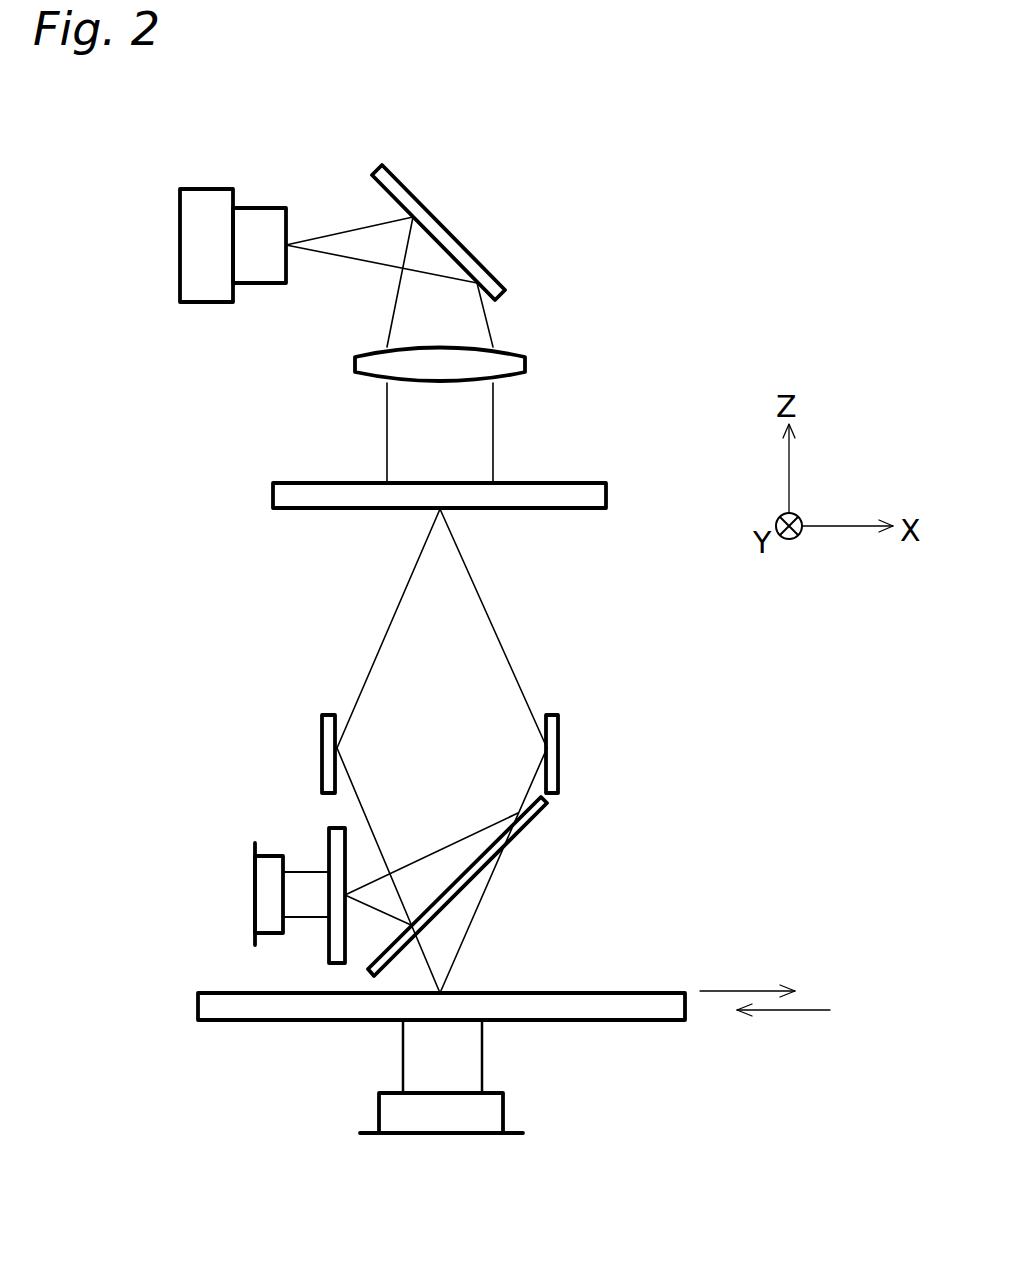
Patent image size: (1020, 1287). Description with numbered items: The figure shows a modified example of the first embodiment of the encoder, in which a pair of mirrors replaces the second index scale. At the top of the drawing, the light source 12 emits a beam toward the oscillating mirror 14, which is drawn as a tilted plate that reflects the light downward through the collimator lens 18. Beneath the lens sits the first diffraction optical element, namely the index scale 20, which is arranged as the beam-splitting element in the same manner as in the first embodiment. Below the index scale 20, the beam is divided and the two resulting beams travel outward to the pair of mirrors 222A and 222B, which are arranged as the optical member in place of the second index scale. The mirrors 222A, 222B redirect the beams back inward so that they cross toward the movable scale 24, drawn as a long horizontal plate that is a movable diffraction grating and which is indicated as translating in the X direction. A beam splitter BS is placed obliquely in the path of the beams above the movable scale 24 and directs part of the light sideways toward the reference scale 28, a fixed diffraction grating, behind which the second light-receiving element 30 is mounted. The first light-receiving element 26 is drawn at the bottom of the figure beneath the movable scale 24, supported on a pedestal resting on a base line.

The light source 12 is at (258, 212).
The oscillating mirror 14 is at (455, 228).
The collimator lens 18 is at (522, 358).
The first diffraction optical element (first index scale) 20 is at (590, 485).
The mirror 222A is at (322, 753).
The mirror 222B is at (560, 753).
The beam splitter BS is at (538, 824).
The reference scale (fixed diffraction grating) 28 is at (329, 952).
The second light-receiving element 30 is at (255, 880).
The movable scale (movable diffraction grating) 24 is at (645, 995).
The first light-receiving element 26 is at (503, 1118).